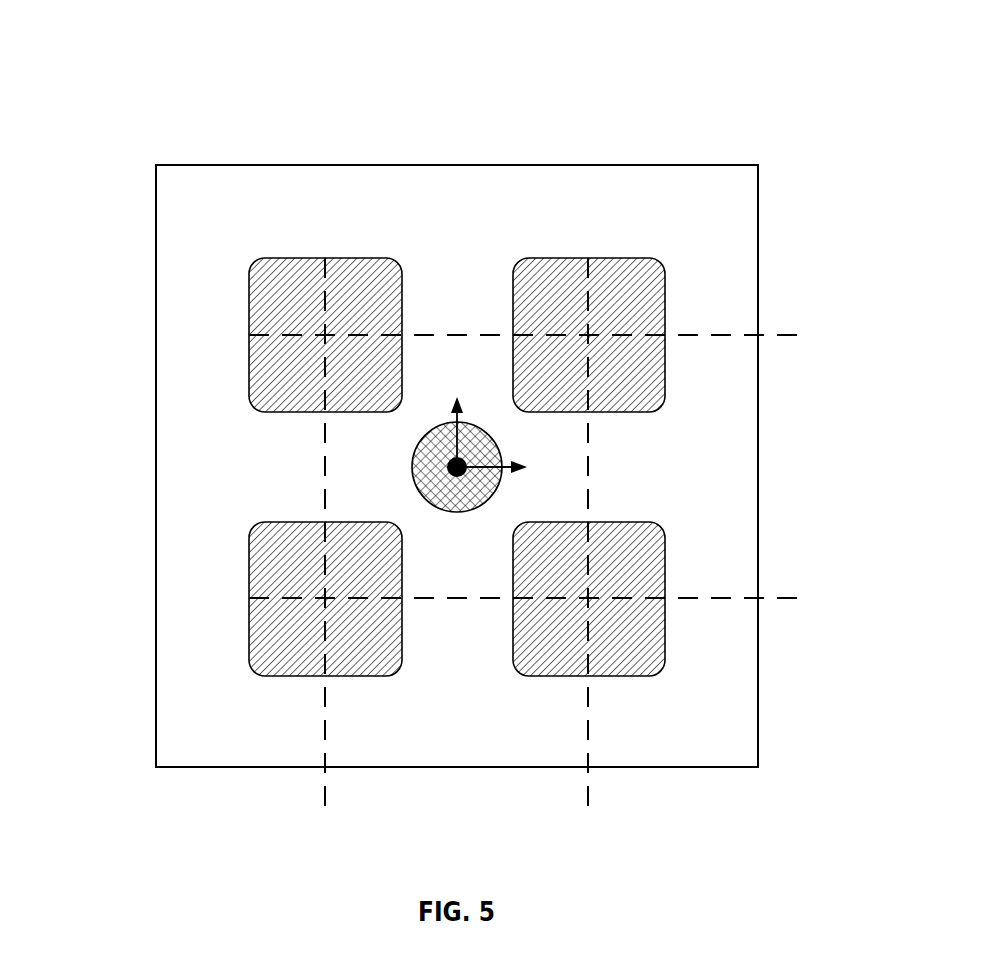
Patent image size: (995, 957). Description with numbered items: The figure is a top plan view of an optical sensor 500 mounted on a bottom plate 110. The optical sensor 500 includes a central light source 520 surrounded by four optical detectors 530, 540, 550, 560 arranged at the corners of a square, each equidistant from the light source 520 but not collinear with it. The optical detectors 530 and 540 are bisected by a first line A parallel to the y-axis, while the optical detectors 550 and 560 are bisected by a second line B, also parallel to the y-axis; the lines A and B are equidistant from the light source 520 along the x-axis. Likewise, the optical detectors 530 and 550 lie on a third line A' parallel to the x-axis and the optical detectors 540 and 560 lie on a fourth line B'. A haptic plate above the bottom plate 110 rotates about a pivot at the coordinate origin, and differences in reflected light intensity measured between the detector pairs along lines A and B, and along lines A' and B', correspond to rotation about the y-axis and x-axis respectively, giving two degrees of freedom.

The optical sensor 500 is at (554, 435).
The bottom plate 110 is at (412, 422).
The light source 520 is at (282, 444).
The optical detector 530 is at (218, 312).
The optical detector 540 is at (218, 569).
The optical detector 550 is at (623, 221).
The optical detector 560 is at (681, 559).